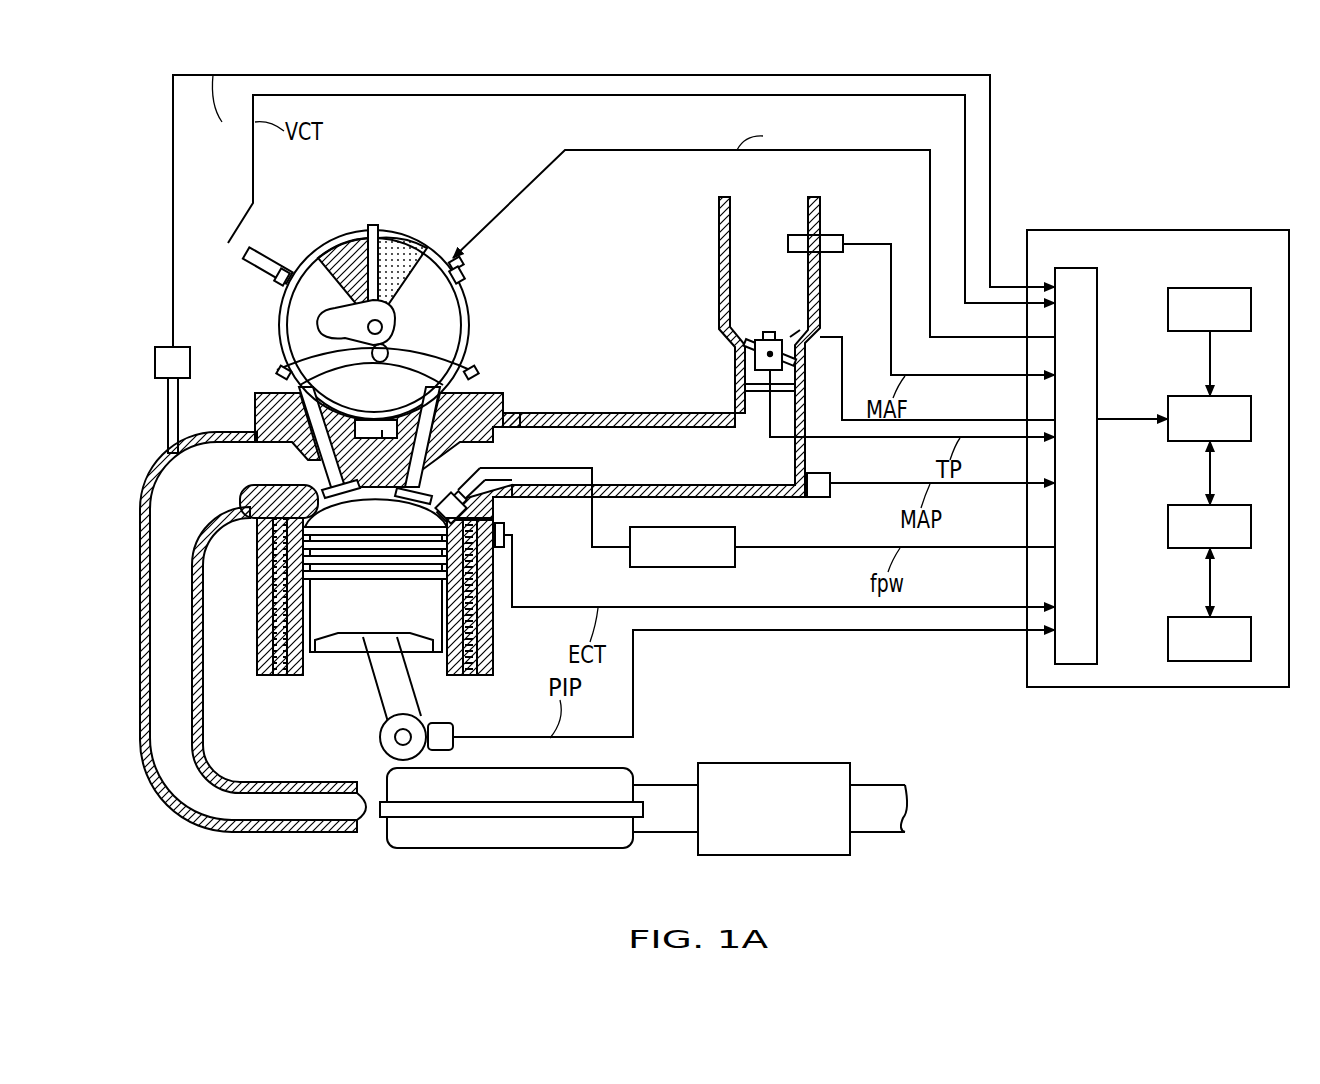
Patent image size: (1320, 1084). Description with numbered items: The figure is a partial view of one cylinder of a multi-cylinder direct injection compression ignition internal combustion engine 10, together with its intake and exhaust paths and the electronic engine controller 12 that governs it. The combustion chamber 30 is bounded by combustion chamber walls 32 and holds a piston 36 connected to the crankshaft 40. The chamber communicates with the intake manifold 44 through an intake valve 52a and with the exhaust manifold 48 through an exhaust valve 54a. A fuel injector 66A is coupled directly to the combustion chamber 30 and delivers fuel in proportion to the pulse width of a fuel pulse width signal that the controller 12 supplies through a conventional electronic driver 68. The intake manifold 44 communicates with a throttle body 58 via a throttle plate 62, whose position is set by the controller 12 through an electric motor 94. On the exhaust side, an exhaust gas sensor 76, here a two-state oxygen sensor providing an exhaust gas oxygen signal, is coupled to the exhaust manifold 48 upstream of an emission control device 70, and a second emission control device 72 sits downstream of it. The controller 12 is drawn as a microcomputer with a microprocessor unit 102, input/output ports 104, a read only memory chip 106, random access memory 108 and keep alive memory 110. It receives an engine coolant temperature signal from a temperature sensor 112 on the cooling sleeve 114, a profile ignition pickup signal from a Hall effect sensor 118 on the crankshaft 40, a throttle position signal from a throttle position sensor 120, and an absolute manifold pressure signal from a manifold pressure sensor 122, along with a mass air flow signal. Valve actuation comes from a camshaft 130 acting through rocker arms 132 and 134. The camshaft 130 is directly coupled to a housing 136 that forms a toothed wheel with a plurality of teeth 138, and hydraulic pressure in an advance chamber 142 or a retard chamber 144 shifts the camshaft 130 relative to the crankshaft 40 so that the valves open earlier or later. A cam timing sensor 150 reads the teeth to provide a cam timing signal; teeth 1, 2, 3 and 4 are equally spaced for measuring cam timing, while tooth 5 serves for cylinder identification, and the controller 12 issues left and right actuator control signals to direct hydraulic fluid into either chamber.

The tooth 1 is at (368, 228).
The tooth 2 is at (466, 282).
The tooth 3 is at (400, 428).
The tooth 4 is at (280, 372).
The tooth 5 is at (284, 284).
The direct injection compression ignition internal combustion engine 10 is at (530, 332).
The electronic engine controller 12 is at (1224, 230).
The combustion chamber 30 is at (312, 534).
The combustion chamber walls 32 is at (298, 680).
The piston 36 is at (368, 638).
The crankshaft 40 is at (381, 745).
The intake manifold 44 is at (661, 347).
The exhaust manifold 48 is at (160, 542).
The intake valve 52a is at (436, 482).
The exhaust valve 54a is at (314, 479).
The throttle body 58 is at (757, 398).
The throttle plate 62 is at (752, 345).
The fuel injector 66A is at (512, 470).
The electronic driver 68 is at (735, 530).
The emission control device 70 is at (640, 768).
The second emission control device 72 is at (770, 763).
The exhaust gas sensor 76 is at (160, 347).
The electric motor 94 is at (785, 337).
The microprocessor unit 102 is at (1243, 396).
The input/output ports 104 is at (1100, 297).
The read only memory chip 106 is at (1222, 286).
The random access memory 108 is at (1243, 505).
The keep alive memory 110 is at (822, 236).
The temperature sensor 112 is at (505, 532).
The cooling sleeve 114 is at (478, 640).
The Hall effect sensor 118 is at (455, 728).
The throttle position sensor 120 is at (757, 362).
The manifold pressure sensor 122 is at (835, 475).
The camshaft 130 is at (343, 326).
The rocker arm 132 is at (296, 386).
The rocker arm 134 is at (458, 386).
The housing 136 is at (282, 333).
The teeth 138 is at (463, 266).
The advance chamber 142 is at (412, 262).
The retard chamber 144 is at (337, 262).
The cam timing sensor 150 is at (250, 271).